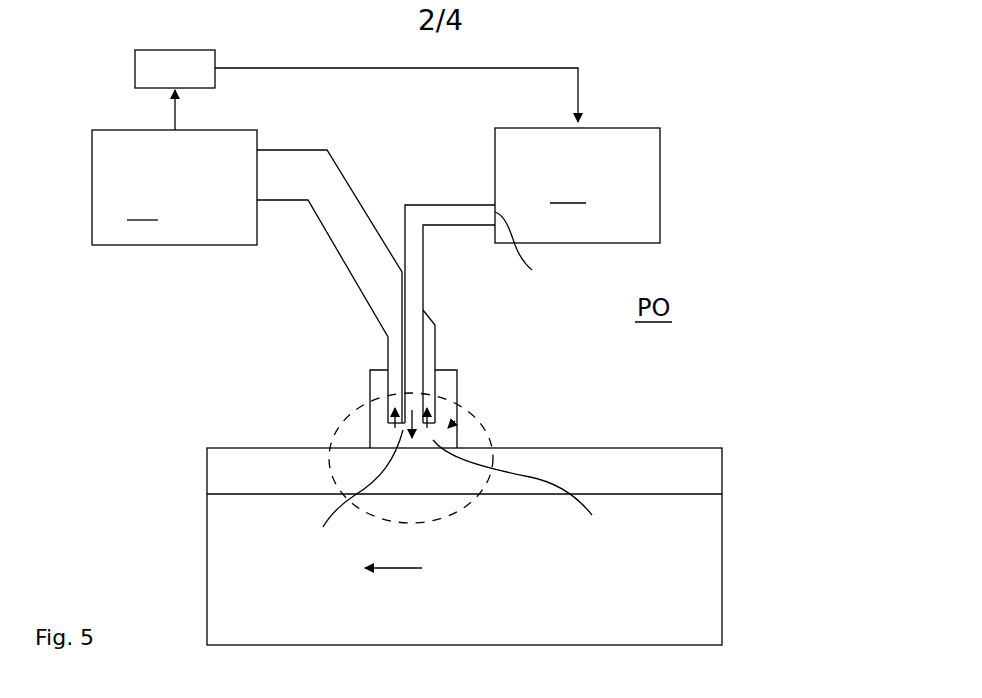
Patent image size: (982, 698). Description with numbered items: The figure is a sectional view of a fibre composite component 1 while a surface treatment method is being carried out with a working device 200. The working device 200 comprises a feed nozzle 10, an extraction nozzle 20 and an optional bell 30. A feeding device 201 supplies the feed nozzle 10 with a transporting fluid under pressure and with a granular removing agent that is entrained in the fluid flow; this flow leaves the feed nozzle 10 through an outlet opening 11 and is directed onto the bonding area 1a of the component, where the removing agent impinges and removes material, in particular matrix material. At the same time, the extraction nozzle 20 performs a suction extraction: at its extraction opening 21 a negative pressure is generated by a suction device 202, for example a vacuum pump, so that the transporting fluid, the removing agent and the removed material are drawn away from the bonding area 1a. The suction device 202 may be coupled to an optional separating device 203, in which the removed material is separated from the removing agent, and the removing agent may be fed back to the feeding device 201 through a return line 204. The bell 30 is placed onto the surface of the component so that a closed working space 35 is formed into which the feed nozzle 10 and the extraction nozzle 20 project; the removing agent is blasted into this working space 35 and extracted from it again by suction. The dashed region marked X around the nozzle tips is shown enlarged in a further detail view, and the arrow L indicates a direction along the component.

The fibre composite component 1 is at (722, 458).
The bonding area 1a is at (632, 448).
The feed nozzle 10 is at (415, 343).
The outlet opening 11 is at (354, 495).
The extraction nozzle 20 is at (432, 358).
The extraction opening 21 is at (530, 492).
The bell 30 is at (372, 422).
The working space 35 is at (455, 421).
The working device 200 is at (705, 145).
The feeding device 201 is at (660, 207).
The suction device 202 is at (130, 247).
The separating device 203 is at (172, 48).
The return line 204 is at (380, 70).
The region X is at (458, 515).
The feed direction L is at (392, 572).